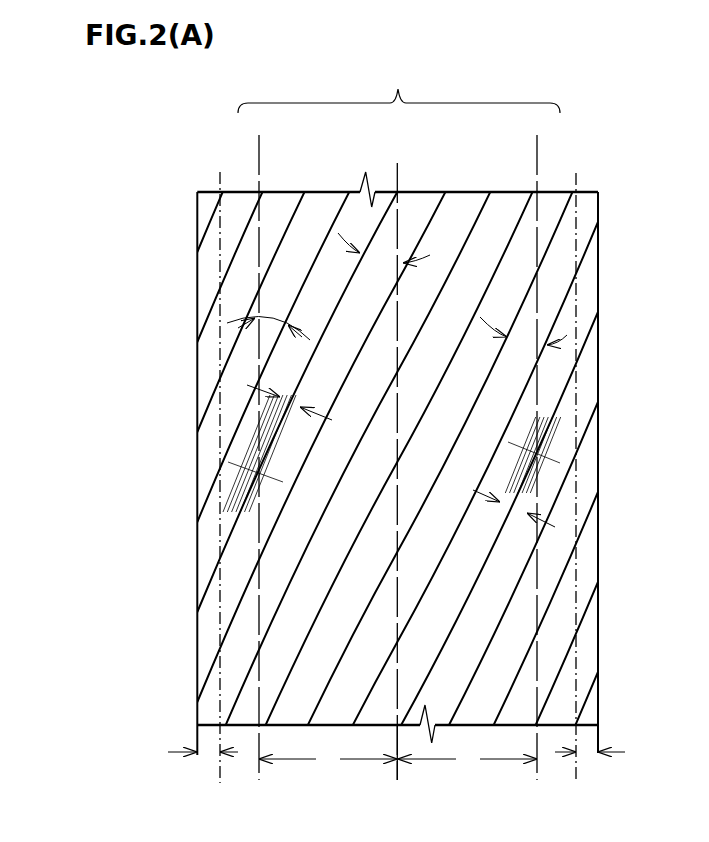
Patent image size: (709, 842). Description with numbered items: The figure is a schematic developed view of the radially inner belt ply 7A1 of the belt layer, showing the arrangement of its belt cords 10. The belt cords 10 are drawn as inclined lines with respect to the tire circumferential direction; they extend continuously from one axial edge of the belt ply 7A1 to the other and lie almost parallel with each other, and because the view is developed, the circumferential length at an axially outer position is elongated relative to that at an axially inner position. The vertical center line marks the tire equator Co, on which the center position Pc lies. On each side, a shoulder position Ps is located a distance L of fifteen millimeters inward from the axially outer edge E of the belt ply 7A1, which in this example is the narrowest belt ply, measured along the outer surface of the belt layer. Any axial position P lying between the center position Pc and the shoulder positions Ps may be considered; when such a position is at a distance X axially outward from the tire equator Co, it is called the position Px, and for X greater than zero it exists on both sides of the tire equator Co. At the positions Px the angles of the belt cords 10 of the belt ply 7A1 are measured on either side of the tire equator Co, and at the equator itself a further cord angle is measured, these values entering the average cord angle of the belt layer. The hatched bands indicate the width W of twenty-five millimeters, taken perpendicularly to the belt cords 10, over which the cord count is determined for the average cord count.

The belt ply 7A1 is at (597, 166).
The belt cords 10 is at (433, 218).
The axially outer edge E is at (197, 636).
The width W is at (282, 397).
The distance L is at (210, 753).
The distance X is at (398, 759).
The axial position P is at (399, 87).
The position Px is at (399, 445).
The center position Pc is at (397, 768).
The shoulder position Ps is at (398, 492).
The tire equator Co is at (397, 459).